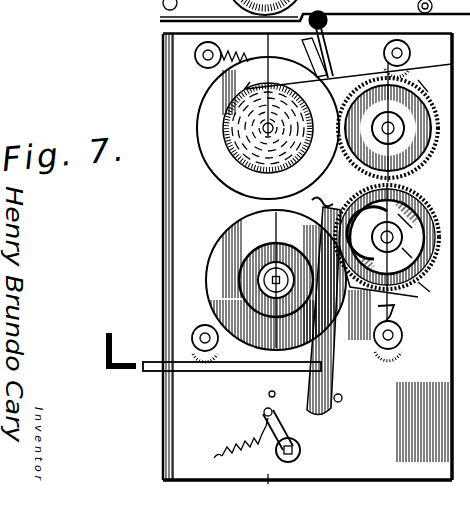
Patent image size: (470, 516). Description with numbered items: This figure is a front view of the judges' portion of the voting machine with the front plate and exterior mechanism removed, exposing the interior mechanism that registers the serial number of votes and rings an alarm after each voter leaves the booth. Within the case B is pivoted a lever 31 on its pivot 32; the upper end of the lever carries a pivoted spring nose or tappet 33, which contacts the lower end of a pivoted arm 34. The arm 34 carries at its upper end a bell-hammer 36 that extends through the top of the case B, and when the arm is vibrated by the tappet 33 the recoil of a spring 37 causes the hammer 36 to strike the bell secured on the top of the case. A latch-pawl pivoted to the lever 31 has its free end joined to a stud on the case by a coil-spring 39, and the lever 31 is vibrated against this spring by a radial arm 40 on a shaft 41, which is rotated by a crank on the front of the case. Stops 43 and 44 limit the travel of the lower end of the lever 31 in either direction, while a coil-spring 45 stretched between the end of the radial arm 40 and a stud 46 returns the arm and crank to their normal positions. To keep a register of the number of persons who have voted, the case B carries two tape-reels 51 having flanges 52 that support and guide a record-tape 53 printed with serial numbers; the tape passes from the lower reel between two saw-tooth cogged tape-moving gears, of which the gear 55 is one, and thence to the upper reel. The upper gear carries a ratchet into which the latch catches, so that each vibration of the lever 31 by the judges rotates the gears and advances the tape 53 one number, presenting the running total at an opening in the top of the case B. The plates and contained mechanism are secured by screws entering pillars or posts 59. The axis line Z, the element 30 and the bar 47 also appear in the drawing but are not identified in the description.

The case B is at (316, 203).
The axis line Z is at (265, 260).
The pawl 30 is at (402, 317).
The lever 31 is at (270, 124).
The pivot 32 is at (337, 386).
The spring nose or tappet 33 is at (328, 196).
The arm 34 is at (420, 204).
The bell-hammer 36 is at (328, 44).
The spring 37 is at (238, 62).
The coil-spring 39 is at (431, 293).
The radial arm 40 is at (289, 429).
The shaft 41 is at (301, 450).
The stop 43 is at (266, 409).
The stop 44 is at (351, 399).
The coil-spring 45 is at (236, 446).
The stud 46 is at (215, 458).
The bar 47 is at (206, 372).
The tape-reels 51 is at (296, 250).
The flanges 52 is at (251, 78).
The record-tape 53 is at (368, 80).
The tape-moving gear 55 is at (428, 76).
The pillars or posts 59 is at (203, 62).